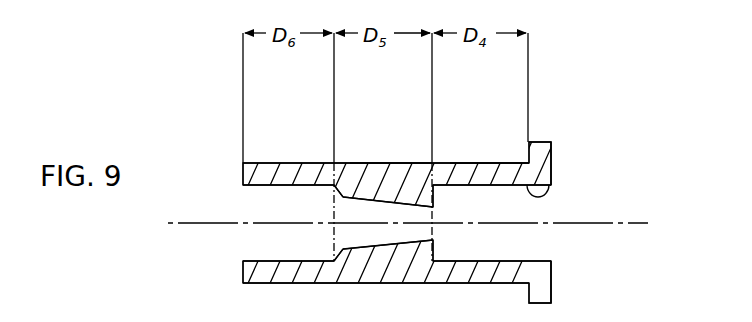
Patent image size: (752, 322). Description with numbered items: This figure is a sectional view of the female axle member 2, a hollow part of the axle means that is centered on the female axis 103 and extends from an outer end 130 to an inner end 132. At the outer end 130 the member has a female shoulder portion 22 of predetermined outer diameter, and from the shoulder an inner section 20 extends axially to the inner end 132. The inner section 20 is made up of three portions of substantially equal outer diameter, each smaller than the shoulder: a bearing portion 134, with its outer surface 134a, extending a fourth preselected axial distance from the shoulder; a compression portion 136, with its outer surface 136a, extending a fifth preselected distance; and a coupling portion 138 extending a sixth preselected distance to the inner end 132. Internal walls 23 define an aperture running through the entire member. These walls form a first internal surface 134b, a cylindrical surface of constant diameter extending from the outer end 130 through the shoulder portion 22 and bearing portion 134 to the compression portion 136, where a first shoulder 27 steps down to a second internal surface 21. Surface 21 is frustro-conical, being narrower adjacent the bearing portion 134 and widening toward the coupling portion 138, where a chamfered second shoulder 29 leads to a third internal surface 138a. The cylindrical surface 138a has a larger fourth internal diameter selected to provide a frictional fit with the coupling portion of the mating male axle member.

The female axle member 2 is at (193, 264).
The inner section 20 is at (343, 162).
The second internal surface 21 is at (368, 248).
The female shoulder portion 22 is at (541, 141).
The internal walls 23 is at (604, 205).
The first shoulder 27 is at (434, 201).
The second shoulder 29 is at (347, 262).
The female axis 103 is at (624, 222).
The outer end 130 is at (552, 165).
The inner end 132 is at (243, 172).
The bearing portion 134 is at (449, 162).
The outer surface of bearing portion 134a is at (465, 162).
The first internal surface 134b is at (469, 260).
The compression portion 136 is at (354, 162).
The outer surface of compression portion 136a is at (368, 162).
The coupling portion 138 is at (258, 161).
The third internal surface 138a is at (259, 261).